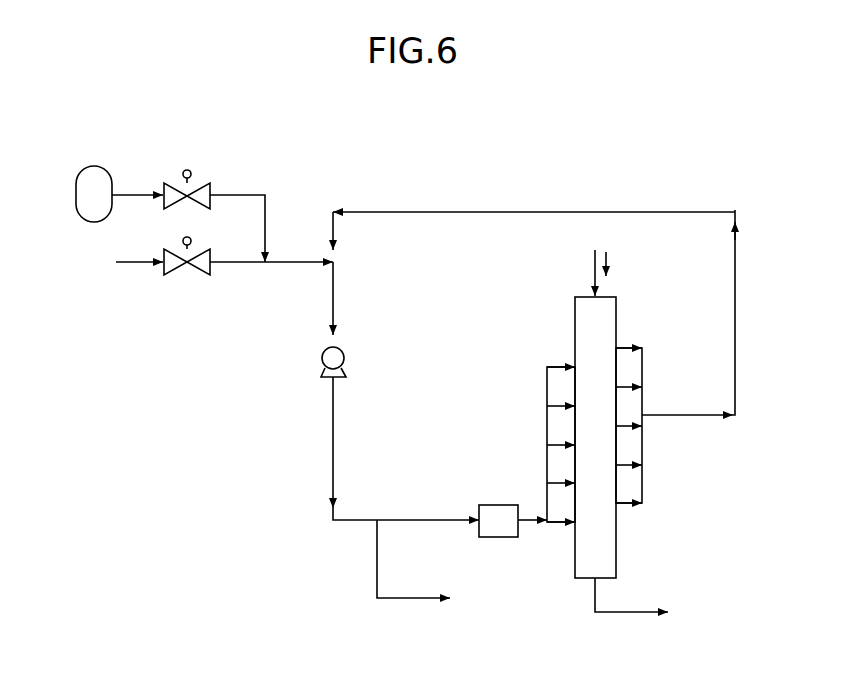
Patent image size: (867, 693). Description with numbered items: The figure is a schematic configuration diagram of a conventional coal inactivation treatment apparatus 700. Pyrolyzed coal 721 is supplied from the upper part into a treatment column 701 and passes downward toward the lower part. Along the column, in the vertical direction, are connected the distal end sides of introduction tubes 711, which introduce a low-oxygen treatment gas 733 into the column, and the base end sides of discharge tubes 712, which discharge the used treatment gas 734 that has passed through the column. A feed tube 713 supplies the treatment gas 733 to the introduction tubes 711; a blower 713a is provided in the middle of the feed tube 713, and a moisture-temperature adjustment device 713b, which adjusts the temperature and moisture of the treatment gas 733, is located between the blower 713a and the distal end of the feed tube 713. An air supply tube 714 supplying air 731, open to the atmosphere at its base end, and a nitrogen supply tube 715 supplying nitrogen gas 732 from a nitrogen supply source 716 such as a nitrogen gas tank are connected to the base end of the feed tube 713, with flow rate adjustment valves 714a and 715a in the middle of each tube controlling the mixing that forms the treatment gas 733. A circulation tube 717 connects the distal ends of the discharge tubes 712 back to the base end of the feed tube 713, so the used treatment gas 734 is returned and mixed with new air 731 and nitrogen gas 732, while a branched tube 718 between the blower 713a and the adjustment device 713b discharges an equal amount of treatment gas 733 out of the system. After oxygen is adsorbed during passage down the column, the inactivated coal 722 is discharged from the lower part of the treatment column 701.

The coal inactivation treatment apparatus 700 is at (670, 150).
The treatment column 701 is at (580, 296).
The introduction tubes 711 is at (545, 365).
The discharge tubes 712 is at (621, 346).
The feed tube 713 is at (337, 300).
The blower 713a is at (345, 355).
The moisture-temperature adjustment device 713b is at (500, 503).
The air supply tube 714 is at (128, 266).
The flow rate adjustment valve 714a is at (184, 278).
The nitrogen supply tube 715 is at (132, 192).
The flow rate adjustment valve 715a is at (171, 182).
The nitrogen supply source 716 is at (98, 165).
The circulation tube 717 is at (473, 208).
The branched tube 718 is at (410, 600).
The coal 721 is at (612, 258).
The coal subjected to the inactivation treatment 722 is at (640, 608).
The air 731 is at (117, 262).
The nitrogen gas 732 is at (76, 197).
The treatment gas 733 is at (315, 252).
The used treatment gas 734 is at (700, 405).